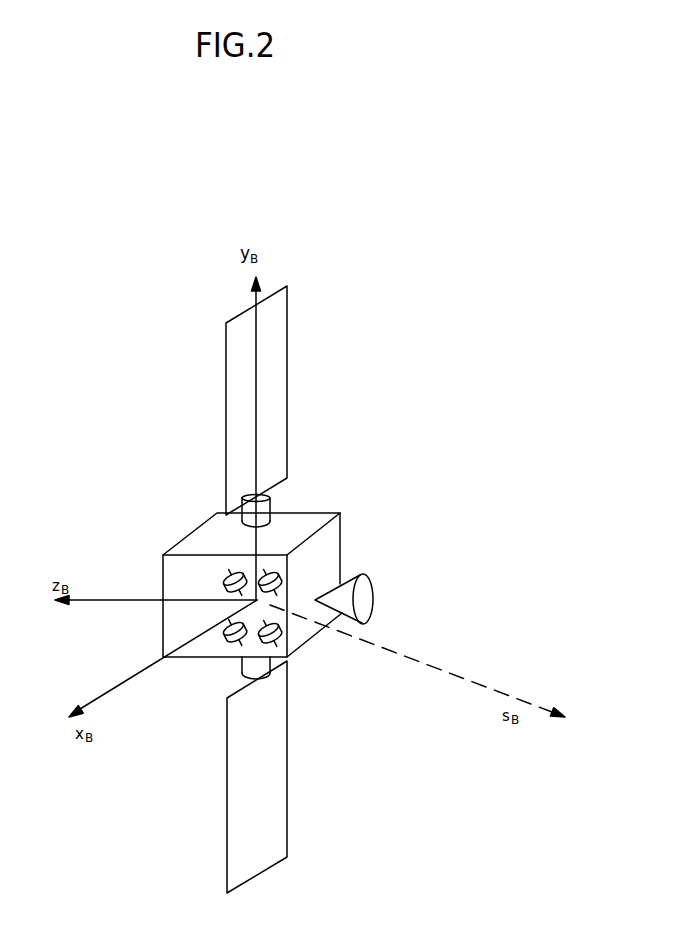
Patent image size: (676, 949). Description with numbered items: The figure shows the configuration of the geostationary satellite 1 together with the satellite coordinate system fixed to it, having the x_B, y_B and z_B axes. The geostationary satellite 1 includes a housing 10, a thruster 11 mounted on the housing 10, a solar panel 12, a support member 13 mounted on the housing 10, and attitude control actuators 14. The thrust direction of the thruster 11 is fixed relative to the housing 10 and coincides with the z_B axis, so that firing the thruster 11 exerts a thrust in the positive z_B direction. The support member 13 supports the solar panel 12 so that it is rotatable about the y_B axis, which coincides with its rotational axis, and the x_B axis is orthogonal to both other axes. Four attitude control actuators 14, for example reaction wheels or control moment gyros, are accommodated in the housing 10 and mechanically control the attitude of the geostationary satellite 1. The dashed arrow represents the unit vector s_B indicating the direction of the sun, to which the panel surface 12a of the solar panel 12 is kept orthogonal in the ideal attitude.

The geostationary satellite 1 is at (311, 303).
The housing 10 is at (215, 530).
The thruster 11 is at (368, 600).
The solar panel 12 is at (287, 338).
The panel surface 12a is at (270, 450).
The support member 13 is at (267, 507).
The attitude control actuators 14 is at (300, 642).